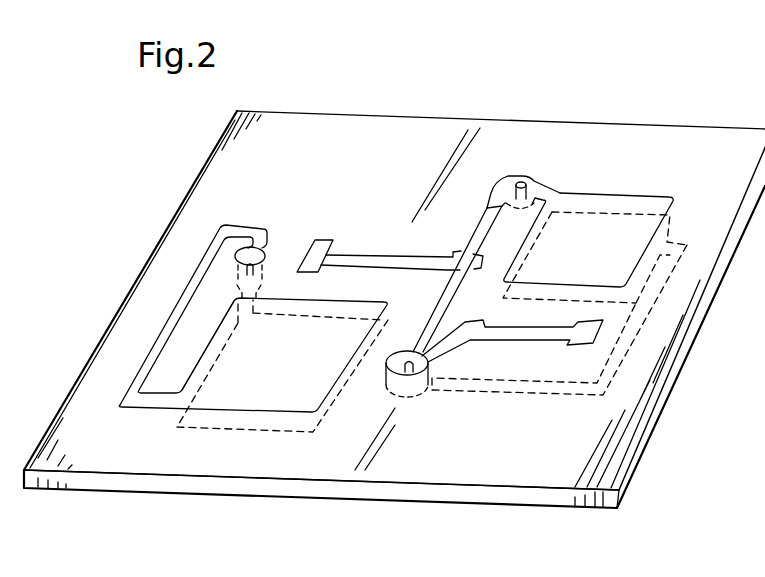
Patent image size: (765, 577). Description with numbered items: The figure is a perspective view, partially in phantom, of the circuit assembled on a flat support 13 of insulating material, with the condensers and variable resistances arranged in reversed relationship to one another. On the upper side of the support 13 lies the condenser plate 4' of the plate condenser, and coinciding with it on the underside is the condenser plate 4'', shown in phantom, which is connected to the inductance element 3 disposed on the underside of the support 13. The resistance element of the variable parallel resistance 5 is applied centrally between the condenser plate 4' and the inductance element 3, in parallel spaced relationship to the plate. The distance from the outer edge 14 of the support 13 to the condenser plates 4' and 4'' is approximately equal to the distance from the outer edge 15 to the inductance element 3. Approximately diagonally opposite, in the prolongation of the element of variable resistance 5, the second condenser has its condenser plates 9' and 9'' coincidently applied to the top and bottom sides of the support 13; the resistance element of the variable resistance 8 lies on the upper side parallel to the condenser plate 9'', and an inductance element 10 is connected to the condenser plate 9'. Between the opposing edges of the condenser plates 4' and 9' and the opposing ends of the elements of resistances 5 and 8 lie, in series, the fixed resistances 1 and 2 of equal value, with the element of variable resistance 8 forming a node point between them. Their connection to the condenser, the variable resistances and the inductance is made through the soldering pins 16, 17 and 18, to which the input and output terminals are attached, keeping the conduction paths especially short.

The fixed resistance 1 is at (440, 296).
The fixed resistance 2 is at (480, 236).
The inductance element 3 is at (528, 392).
The condenser plate 4' is at (599, 220).
The condenser plate 4'' is at (603, 265).
The variable parallel resistance 5 is at (513, 330).
The variable resistance 8 is at (378, 255).
The condenser plate 9' is at (253, 367).
The condenser plate 9'' is at (267, 382).
The inductance element 10 is at (167, 320).
The support 13 is at (648, 457).
The outer edge 14 is at (508, 120).
The outer edge 15 is at (476, 490).
The soldering pin 16 is at (523, 183).
The soldering pin 17 is at (419, 396).
The soldering pin 18 is at (263, 252).